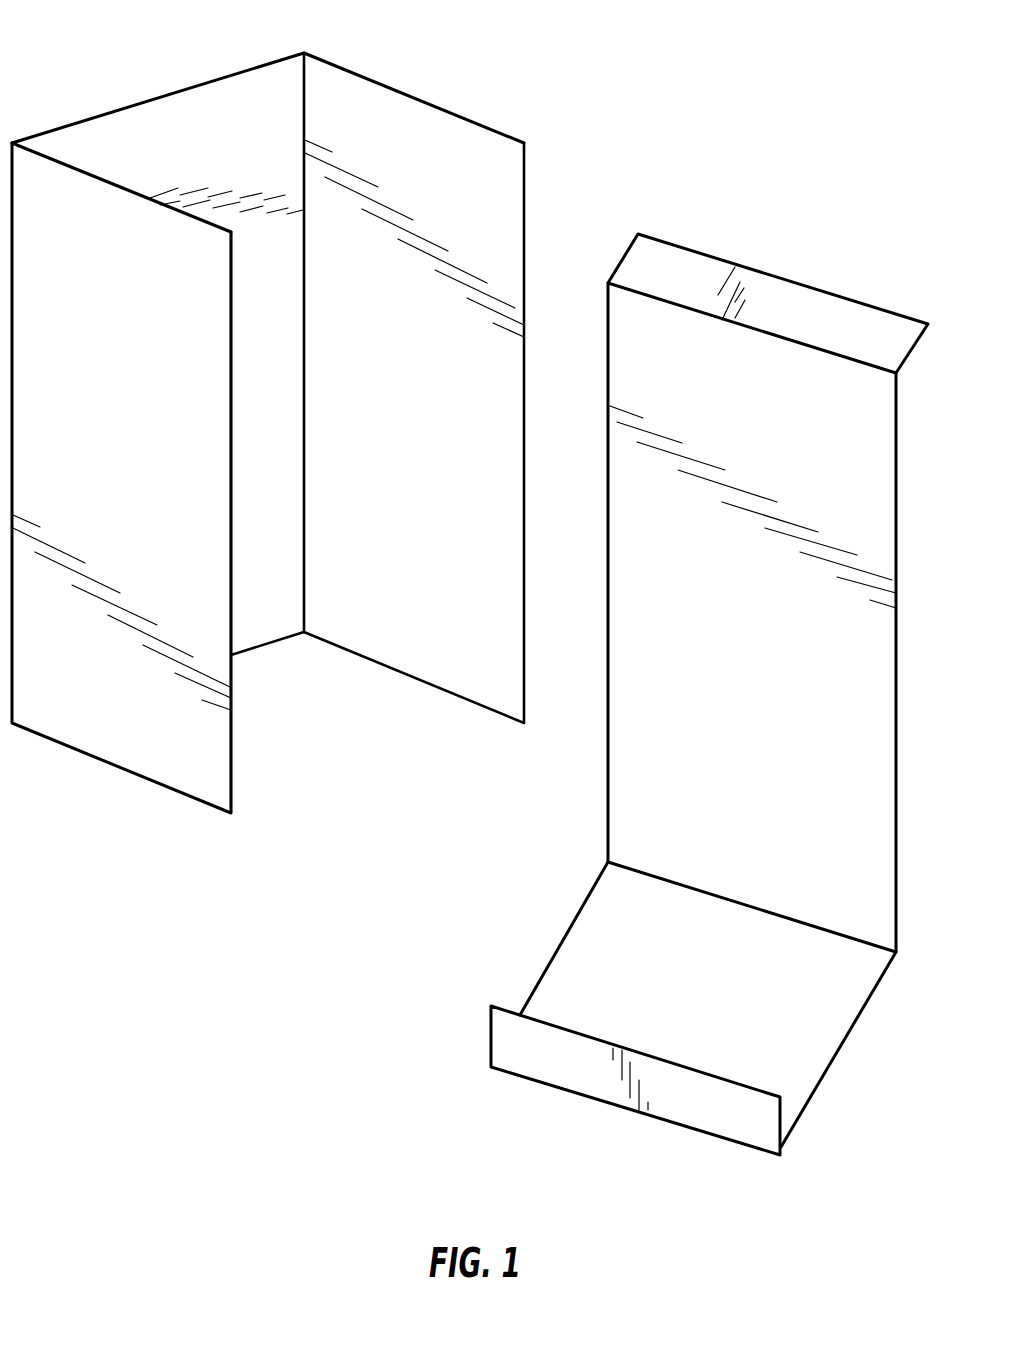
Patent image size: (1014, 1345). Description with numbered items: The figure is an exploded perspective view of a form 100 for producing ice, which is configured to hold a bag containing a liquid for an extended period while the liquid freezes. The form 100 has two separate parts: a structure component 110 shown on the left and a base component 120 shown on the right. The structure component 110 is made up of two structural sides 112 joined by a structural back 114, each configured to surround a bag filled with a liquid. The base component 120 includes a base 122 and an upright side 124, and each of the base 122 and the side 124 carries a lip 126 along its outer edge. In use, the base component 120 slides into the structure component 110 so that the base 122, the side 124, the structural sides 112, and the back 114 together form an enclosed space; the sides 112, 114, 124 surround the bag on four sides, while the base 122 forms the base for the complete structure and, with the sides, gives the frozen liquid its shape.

The form 100 is at (50, 31).
The structure component 110 is at (115, 764).
The structural sides 112 is at (398, 409).
The structural back 114 is at (199, 156).
The base component 120 is at (830, 289).
The base 122 is at (674, 1003).
The side 124 is at (732, 639).
The lip 126 is at (762, 272).